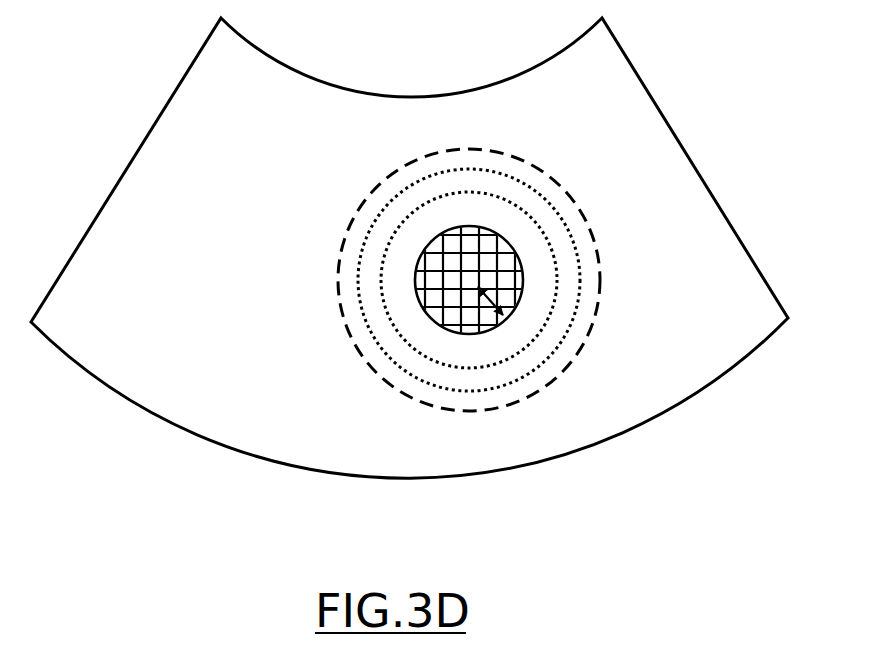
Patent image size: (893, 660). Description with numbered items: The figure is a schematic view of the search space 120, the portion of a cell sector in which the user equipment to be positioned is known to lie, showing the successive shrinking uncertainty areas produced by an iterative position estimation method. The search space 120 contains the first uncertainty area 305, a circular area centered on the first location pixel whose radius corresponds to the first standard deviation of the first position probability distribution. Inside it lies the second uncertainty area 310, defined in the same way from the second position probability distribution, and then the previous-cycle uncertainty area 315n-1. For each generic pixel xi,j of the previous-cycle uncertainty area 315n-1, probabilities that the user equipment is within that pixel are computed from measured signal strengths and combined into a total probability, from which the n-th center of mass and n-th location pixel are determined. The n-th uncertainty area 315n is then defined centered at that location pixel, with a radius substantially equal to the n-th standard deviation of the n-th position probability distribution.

The search space 120 is at (202, 427).
The first uncertainty area 305 is at (573, 198).
The second uncertainty area 310 is at (555, 352).
The (n-1)-th uncertainty area 315n-1 is at (557, 270).
The n-th uncertainty area 315n is at (475, 335).
The generic pixel xi,j is at (472, 273).